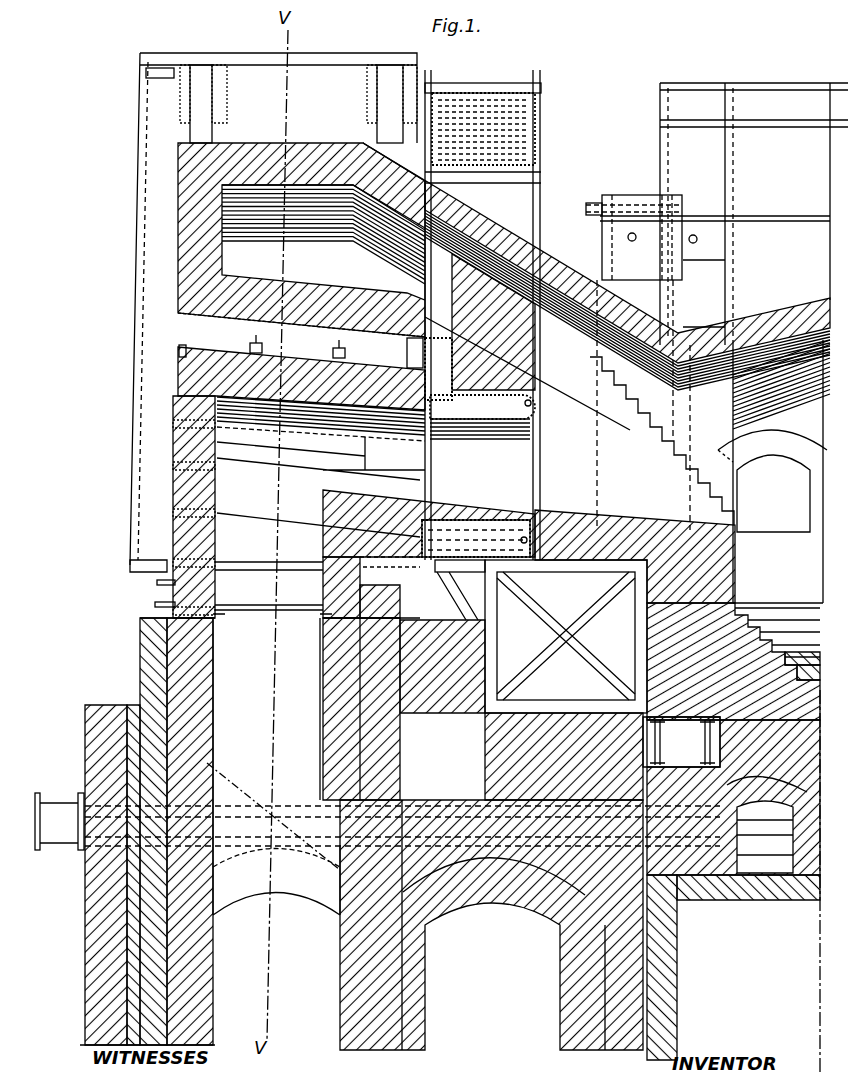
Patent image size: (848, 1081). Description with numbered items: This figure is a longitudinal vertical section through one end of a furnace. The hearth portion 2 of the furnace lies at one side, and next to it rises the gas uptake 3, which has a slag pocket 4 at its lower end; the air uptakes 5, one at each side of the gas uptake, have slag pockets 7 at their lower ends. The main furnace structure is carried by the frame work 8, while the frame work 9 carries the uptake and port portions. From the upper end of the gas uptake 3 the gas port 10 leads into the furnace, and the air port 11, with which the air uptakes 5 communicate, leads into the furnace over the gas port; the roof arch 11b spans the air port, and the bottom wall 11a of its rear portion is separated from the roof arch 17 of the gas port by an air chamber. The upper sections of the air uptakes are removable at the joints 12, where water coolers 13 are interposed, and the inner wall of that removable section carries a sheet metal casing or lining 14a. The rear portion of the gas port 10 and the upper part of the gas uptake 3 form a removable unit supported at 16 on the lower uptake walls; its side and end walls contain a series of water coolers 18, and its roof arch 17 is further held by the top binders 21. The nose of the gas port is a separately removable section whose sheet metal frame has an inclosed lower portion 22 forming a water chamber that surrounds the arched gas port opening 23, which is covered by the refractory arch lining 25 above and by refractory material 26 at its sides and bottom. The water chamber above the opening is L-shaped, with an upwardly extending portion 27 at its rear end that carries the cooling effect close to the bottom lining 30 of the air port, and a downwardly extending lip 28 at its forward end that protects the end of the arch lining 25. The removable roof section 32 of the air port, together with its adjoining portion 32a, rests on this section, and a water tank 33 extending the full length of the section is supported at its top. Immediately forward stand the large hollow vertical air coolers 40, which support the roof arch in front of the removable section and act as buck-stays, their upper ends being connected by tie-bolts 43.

The hearth portion 2 is at (774, 471).
The gas uptake 3 is at (266, 766).
The slag pocket 4 is at (276, 929).
The air uptakes 5 is at (482, 898).
The slag pockets 7 is at (491, 925).
The frame work of the main furnace structure 8 is at (662, 152).
The frame work of the uptake and port portions 9 is at (350, 90).
The gas port 10 is at (321, 482).
The air port 11 is at (323, 236).
The bottom wall of the rear portion of the air port 11a is at (327, 300).
The roof arch 11b is at (322, 180).
The joints 12 is at (157, 583).
The water coolers 13 is at (215, 578).
The sheet metal casing or lining 14a is at (299, 472).
The support 16 is at (322, 620).
The roof arch 17 is at (380, 425).
The water coolers 18 is at (215, 513).
The top binders 21 is at (338, 354).
The inclosed lower portion 22 is at (480, 560).
The arched gas port opening 23 is at (480, 460).
The refractory arch lining 25 is at (478, 425).
The refractory lining 26 is at (495, 520).
The upwardly extending portion 27 is at (452, 350).
The downwardly extending lip 28 is at (532, 412).
The refractory lining of the air port opening 30 is at (500, 368).
The removable roof section 32 is at (485, 235).
The chute lining 32a is at (642, 355).
The water tank 33 is at (535, 140).
The hollow vertical air coolers 40 is at (602, 248).
The tie-bolts 43 is at (770, 222).